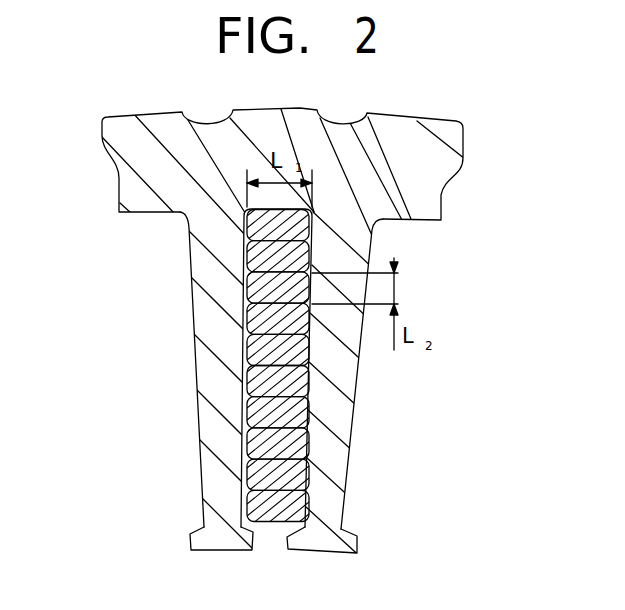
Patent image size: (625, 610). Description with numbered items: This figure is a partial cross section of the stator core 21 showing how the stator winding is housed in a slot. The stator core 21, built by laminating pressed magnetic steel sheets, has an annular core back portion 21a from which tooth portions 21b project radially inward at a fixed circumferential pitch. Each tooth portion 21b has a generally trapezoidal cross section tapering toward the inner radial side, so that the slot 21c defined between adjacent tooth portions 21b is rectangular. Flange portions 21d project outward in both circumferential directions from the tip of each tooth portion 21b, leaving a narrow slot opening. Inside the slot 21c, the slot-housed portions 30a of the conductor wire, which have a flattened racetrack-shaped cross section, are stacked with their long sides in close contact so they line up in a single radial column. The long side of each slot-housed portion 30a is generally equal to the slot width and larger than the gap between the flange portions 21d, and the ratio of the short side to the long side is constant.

The stator core 21 is at (283, 341).
The core back portion 21a is at (127, 170).
The tooth portion 21b is at (207, 418).
The slot 21c is at (300, 392).
The flange portion 21d is at (253, 552).
The slot-housed portion 30a is at (245, 371).